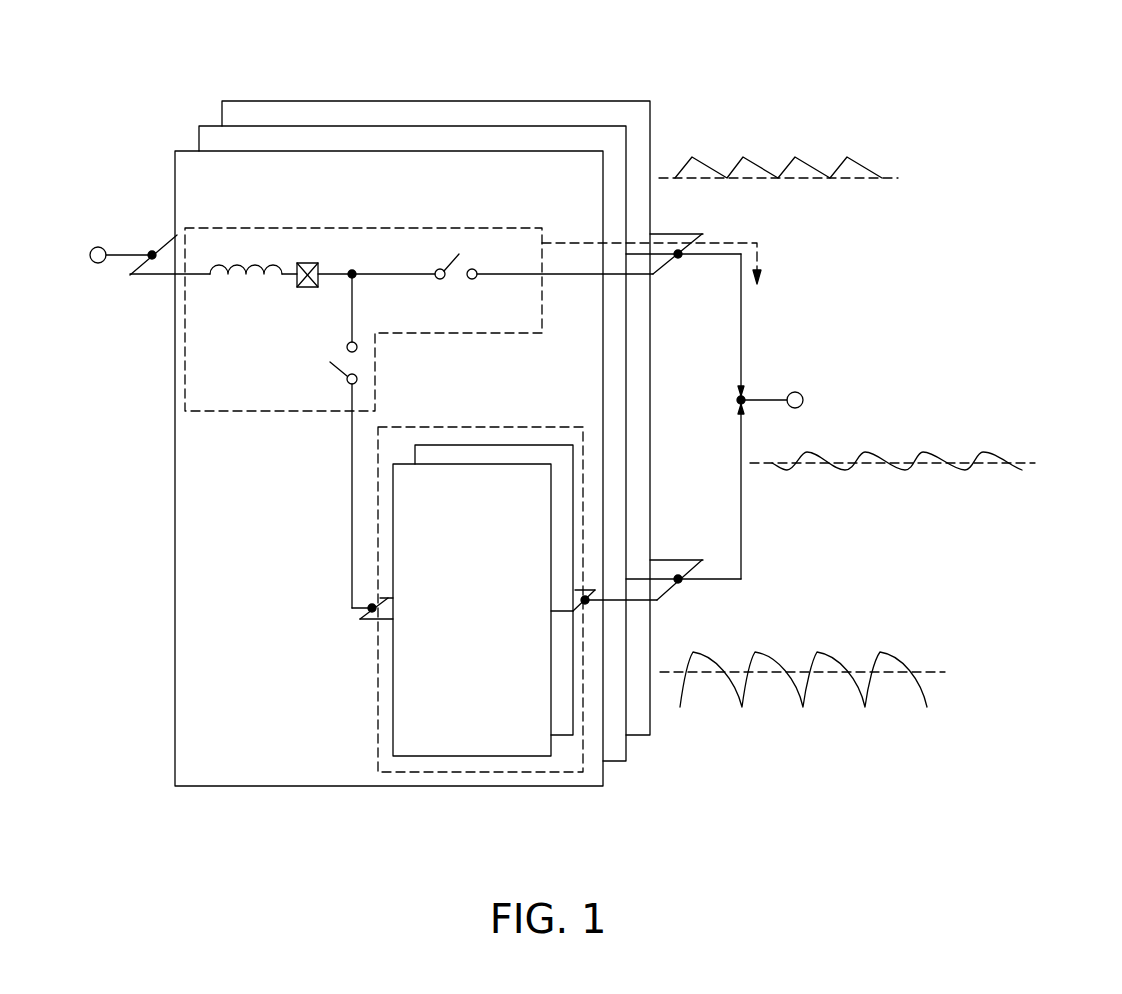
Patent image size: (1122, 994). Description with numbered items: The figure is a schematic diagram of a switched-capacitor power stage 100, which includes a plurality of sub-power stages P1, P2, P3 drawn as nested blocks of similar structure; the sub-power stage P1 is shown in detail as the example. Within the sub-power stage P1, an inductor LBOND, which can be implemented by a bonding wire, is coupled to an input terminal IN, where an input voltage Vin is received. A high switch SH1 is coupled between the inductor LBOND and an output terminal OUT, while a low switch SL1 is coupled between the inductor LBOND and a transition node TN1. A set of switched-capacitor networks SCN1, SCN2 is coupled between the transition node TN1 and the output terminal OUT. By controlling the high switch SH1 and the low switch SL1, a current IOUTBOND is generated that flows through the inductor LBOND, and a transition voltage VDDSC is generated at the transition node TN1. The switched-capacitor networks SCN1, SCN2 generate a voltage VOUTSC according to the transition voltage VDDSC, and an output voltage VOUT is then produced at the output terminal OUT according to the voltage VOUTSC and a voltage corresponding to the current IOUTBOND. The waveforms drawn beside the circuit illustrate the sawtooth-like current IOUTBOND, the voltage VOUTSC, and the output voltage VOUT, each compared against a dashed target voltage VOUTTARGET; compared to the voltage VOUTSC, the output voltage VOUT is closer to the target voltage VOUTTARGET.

The switched-capacitor power stage 100 is at (40, 31).
The sub-power stage P1 is at (180, 148).
The sub-power stage P2 is at (206, 123).
The sub-power stage P3 is at (230, 98).
The input terminal IN is at (98, 246).
The input voltage Vin is at (79, 256).
The inductor LBOND is at (246, 257).
The high switch SH1 is at (502, 282).
The low switch SL1 is at (327, 329).
The transition node TN1 is at (368, 606).
The transition voltage VDDSC is at (342, 516).
The switched-capacitor network SCN1 is at (518, 756).
The switched-capacitor network SCN2 is at (562, 735).
The output terminal OUT is at (746, 396).
The output voltage VOUT is at (940, 460).
The current IOUTBOND is at (767, 128).
The voltage VOUTSC is at (898, 662).
The target voltage VOUTTARGET is at (945, 672).